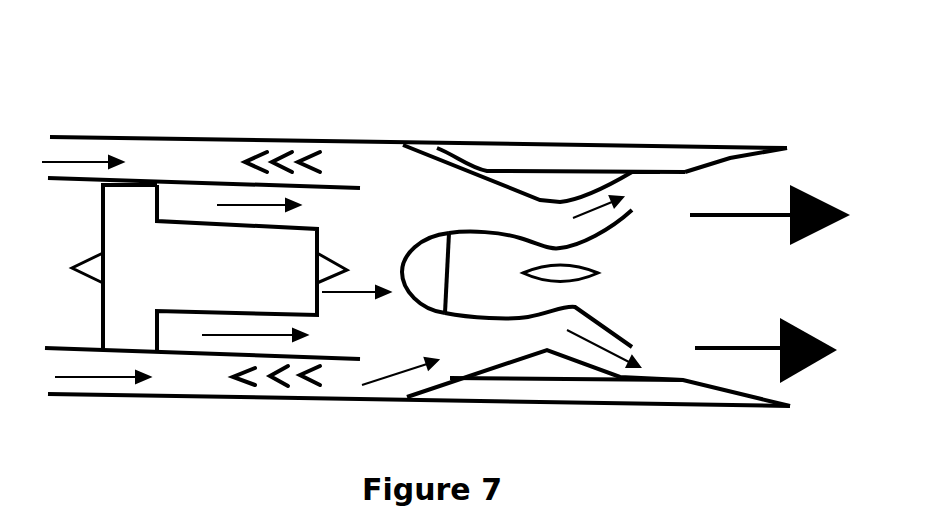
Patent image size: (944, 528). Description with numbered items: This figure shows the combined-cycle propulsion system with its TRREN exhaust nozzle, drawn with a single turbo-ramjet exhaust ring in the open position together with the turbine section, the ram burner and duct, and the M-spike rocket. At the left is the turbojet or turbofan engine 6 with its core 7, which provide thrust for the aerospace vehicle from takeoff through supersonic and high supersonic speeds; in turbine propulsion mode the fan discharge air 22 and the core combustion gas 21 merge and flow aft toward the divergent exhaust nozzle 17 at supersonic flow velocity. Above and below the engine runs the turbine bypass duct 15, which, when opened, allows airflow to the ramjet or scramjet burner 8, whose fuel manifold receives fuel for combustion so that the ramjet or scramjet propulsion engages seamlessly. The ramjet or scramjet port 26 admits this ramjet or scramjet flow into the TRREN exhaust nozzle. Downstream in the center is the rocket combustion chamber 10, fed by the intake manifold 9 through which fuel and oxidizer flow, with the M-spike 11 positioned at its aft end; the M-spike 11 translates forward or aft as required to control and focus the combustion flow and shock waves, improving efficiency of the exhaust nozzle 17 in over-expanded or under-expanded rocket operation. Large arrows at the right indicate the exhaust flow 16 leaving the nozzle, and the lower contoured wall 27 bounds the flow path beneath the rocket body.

The turbojet or turbofan engine 6 is at (130, 203).
The core 7 is at (200, 255).
The ramjet or scramjet burner 8 is at (278, 153).
The intake manifold 9 is at (428, 265).
The rocket combustion chamber 10 is at (483, 268).
The M-spike 11 is at (562, 273).
The turbine bypass duct 15 is at (201, 270).
The exhaust flow 16 is at (770, 284).
The divergent exhaust nozzle 17 is at (725, 165).
The core combustion gas 21 is at (357, 277).
The fan discharge air 22 is at (272, 268).
The ramjet or scramjet port 26 is at (563, 183).
The lower ramp 27 is at (419, 368).